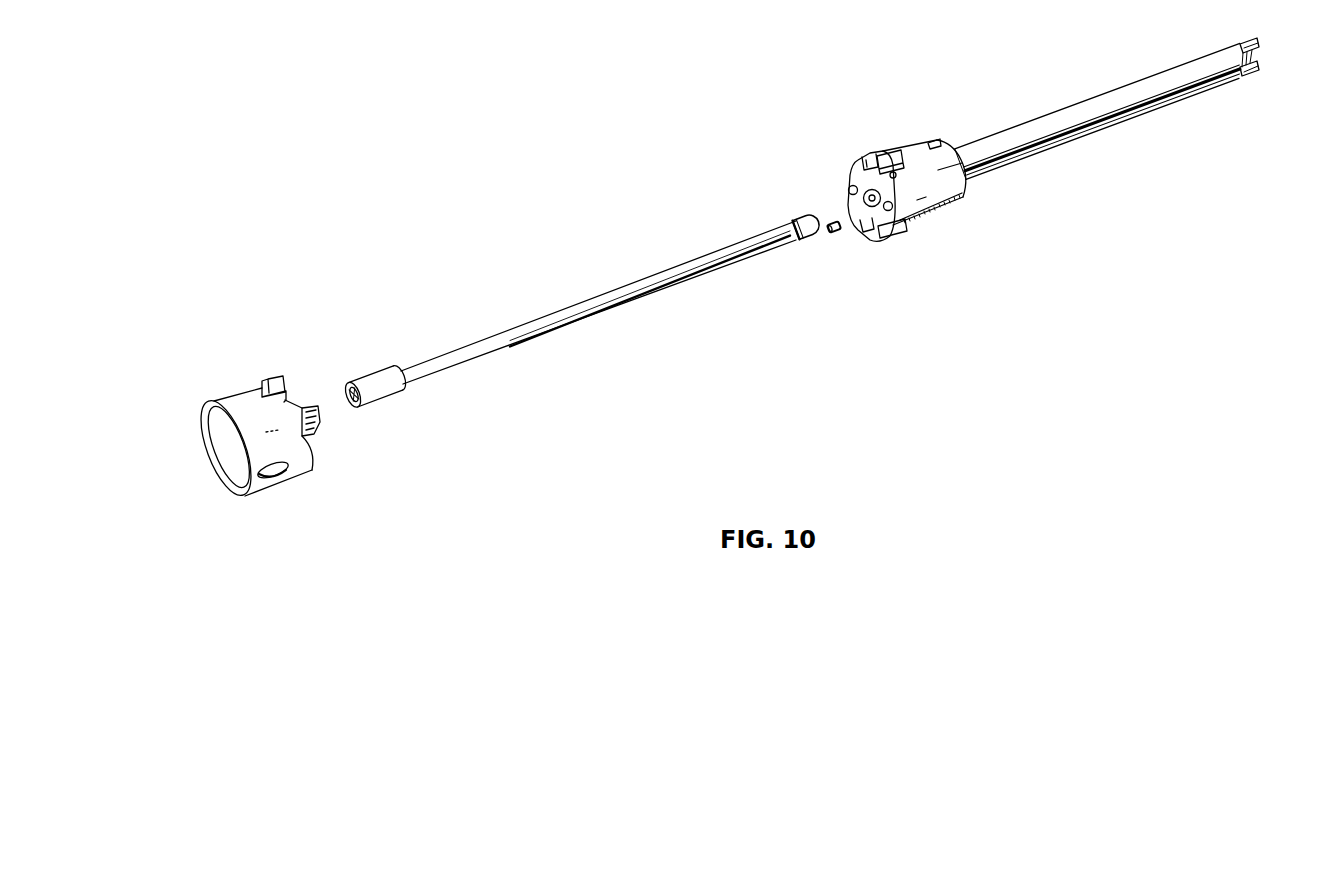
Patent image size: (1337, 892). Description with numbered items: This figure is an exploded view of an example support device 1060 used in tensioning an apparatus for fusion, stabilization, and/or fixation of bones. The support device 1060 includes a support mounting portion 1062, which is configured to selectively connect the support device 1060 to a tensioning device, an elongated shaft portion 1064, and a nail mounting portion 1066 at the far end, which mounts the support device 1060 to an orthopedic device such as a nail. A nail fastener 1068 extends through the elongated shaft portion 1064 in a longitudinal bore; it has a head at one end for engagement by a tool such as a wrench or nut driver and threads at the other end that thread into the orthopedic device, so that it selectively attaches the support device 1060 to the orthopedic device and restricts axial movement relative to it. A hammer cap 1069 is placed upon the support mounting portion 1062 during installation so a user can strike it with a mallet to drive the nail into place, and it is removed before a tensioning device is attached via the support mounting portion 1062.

The support device 1060 is at (313, 213).
The support mounting portion 1062 is at (924, 160).
The elongated shaft portion 1064 is at (1079, 123).
The nail mounting portion 1066 is at (1257, 62).
The nail fastener 1068 is at (614, 293).
The hammer cap 1069 is at (243, 418).